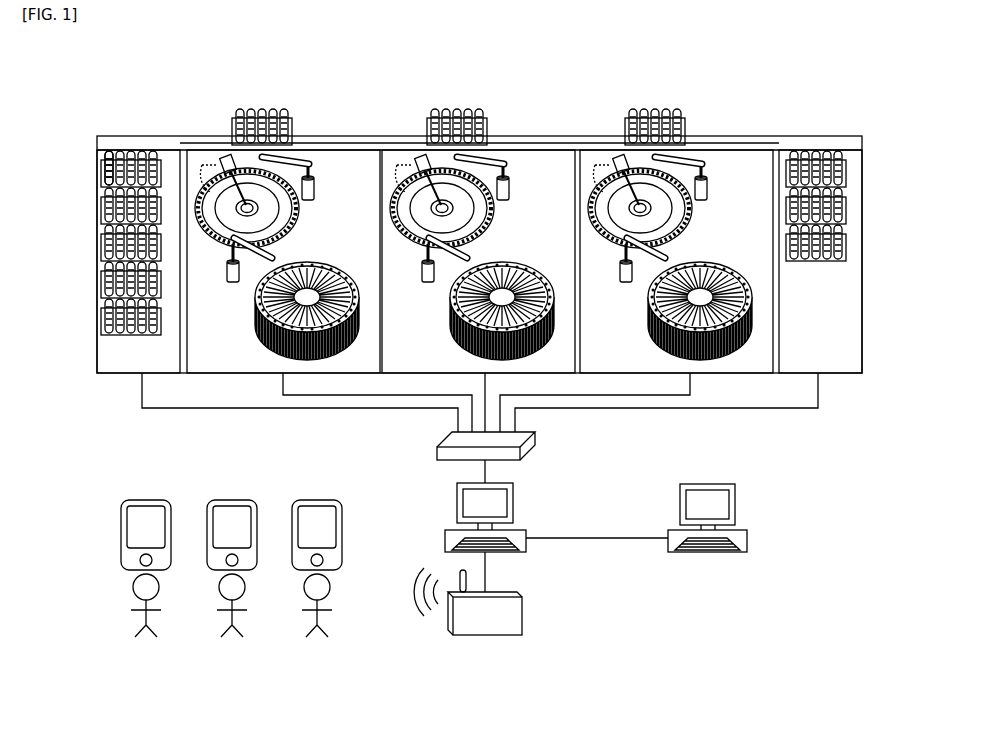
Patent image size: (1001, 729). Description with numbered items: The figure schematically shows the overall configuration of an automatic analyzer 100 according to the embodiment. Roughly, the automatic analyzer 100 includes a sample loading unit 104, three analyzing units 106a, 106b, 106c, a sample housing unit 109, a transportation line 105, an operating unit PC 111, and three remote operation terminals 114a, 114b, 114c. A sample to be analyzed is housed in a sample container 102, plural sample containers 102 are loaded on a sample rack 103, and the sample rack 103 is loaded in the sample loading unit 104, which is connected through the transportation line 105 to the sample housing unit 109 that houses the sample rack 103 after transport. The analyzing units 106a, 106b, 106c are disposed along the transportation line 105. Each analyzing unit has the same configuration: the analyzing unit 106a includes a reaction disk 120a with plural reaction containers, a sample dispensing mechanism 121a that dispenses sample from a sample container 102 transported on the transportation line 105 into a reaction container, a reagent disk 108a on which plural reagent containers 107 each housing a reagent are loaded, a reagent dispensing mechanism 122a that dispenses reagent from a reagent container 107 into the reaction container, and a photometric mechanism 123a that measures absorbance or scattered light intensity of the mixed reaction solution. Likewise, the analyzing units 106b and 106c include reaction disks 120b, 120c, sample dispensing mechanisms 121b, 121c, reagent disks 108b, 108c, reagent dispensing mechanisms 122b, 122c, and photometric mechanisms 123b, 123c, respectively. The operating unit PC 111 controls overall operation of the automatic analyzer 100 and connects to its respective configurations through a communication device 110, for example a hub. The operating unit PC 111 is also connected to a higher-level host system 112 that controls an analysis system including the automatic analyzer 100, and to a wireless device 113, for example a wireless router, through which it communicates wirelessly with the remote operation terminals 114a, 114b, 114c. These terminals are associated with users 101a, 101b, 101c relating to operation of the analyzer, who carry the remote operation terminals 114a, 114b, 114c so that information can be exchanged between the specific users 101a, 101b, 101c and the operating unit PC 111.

The automatic analyzer 100 is at (88, 47).
The user 101a is at (148, 648).
The user 101b is at (234, 648).
The user 101c is at (319, 648).
The sample container 102 is at (100, 158).
The sample rack 103 is at (100, 202).
The sample loading unit 104 is at (100, 352).
The transportation line 105 is at (172, 136).
The analyzing unit 106a is at (345, 155).
The analyzing unit 106b is at (478, 225).
The analyzing unit 106c is at (676, 225).
The reagent container 107 is at (262, 373).
The reagent disk 108a is at (254, 332).
The reagent disk 108b is at (477, 311).
The reagent disk 108c is at (675, 311).
The sample housing unit 109 is at (848, 352).
The communication device 110 is at (538, 445).
The operating unit PC 111 is at (531, 511).
The higher-level host system 112 is at (757, 511).
The wireless device 113 is at (522, 624).
The remote operation terminal 114a is at (133, 499).
The remote operation terminal 114b is at (219, 499).
The remote operation terminal 114c is at (304, 499).
The reaction disk 120a is at (303, 246).
The reaction disk 120b is at (476, 211).
The reaction disk 120c is at (674, 211).
The sample dispensing mechanism 121a is at (325, 192).
The sample dispensing mechanism 121b is at (510, 191).
The sample dispensing mechanism 121c is at (707, 191).
The reagent dispensing mechanism 122a is at (222, 279).
The reagent dispensing mechanism 122b is at (427, 277).
The reagent dispensing mechanism 122c is at (625, 277).
The photometric mechanism 123a is at (226, 146).
The photometric mechanism 123b is at (422, 126).
The photometric mechanism 123c is at (619, 126).